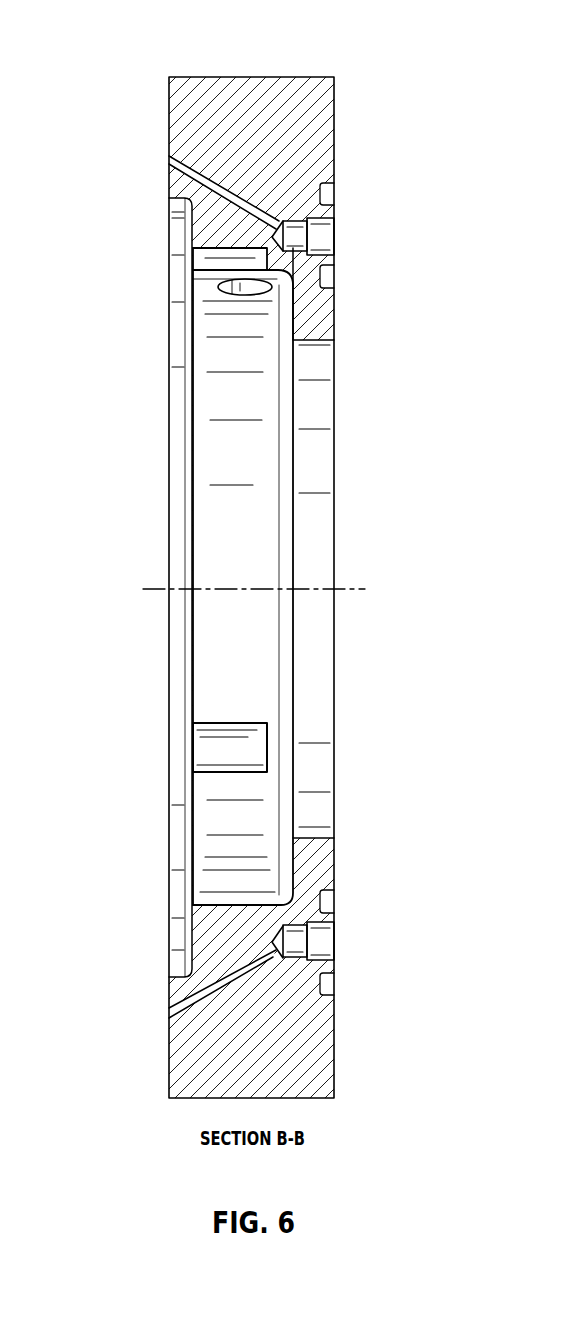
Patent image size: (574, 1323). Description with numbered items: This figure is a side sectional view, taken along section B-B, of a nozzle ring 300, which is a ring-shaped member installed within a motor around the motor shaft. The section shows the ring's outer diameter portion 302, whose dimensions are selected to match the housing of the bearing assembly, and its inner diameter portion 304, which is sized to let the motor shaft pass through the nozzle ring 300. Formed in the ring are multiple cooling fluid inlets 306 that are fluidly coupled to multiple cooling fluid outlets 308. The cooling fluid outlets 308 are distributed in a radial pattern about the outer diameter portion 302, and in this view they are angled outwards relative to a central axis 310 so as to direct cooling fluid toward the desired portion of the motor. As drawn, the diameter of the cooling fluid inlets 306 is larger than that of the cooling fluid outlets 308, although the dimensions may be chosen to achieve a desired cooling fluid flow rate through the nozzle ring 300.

The nozzle ring 300 is at (98, 85).
The outer diameter portion 302 is at (178, 1068).
The inner diameter portion 304 is at (317, 322).
The cooling fluid inlet 306 is at (322, 235).
The cooling fluid outlet 308 is at (169, 160).
The central axis 310 is at (234, 590).